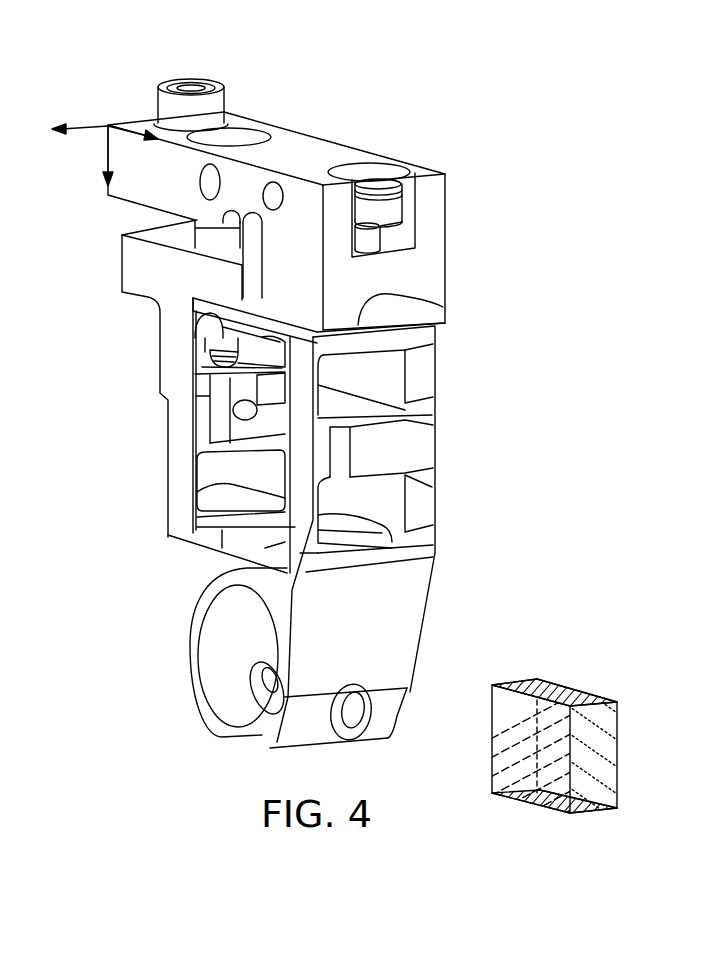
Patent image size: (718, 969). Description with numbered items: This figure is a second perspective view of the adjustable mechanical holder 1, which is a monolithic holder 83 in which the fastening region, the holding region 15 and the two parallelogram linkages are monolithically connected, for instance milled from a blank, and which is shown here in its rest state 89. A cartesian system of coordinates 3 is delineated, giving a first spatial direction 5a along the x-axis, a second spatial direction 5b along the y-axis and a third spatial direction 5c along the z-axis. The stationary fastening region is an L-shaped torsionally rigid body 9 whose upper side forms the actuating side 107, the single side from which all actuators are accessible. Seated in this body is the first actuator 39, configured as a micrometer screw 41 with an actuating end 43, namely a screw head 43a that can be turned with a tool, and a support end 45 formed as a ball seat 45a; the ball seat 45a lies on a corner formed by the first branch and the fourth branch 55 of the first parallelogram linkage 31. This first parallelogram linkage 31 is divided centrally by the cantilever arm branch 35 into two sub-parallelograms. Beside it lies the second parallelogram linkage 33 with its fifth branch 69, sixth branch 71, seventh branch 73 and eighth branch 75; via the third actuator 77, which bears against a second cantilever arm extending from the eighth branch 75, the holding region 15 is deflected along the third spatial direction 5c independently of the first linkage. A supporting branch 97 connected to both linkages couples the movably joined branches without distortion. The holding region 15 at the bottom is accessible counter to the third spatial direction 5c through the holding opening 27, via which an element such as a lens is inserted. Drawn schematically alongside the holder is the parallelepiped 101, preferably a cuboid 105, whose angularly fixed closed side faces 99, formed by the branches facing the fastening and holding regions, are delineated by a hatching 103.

The adjustable mechanical holder 1 is at (276, 183).
The monolithic holder 83 is at (276, 183).
The rest state 89 is at (292, 62).
The cartesian system of coordinates 3 is at (107, 121).
The first spatial direction 5a is at (104, 152).
The second spatial direction 5b is at (133, 125).
The third spatial direction 5c is at (83, 123).
The actuating side 107 is at (281, 121).
The L-shaped torsionally rigid body 9 is at (357, 148).
The first actuator 39 is at (457, 213).
The micrometer screw 41 is at (457, 213).
The actuating end 43 is at (457, 213).
The screw head 43a is at (398, 203).
The support end 45 is at (459, 307).
The ball seat 45a is at (398, 300).
The third actuator 77 is at (192, 220).
The fifth branch 69 is at (405, 335).
The cantilever arm branch 35 is at (362, 402).
The second parallelogram linkage 33 is at (191, 402).
The sixth branch 71 is at (175, 427).
The supporting branch 97 is at (298, 458).
The eighth branch 75 is at (293, 480).
The fourth branch 55 is at (427, 438).
The first parallelogram linkage 31 is at (389, 434).
The seventh branch 73 is at (418, 549).
The holding region 15 is at (453, 555).
The holding opening 27 is at (227, 683).
The parallelepiped 101 is at (578, 658).
The cuboid 105 is at (574, 672).
The closed side face 99 is at (596, 757).
The hatching 103 is at (590, 691).